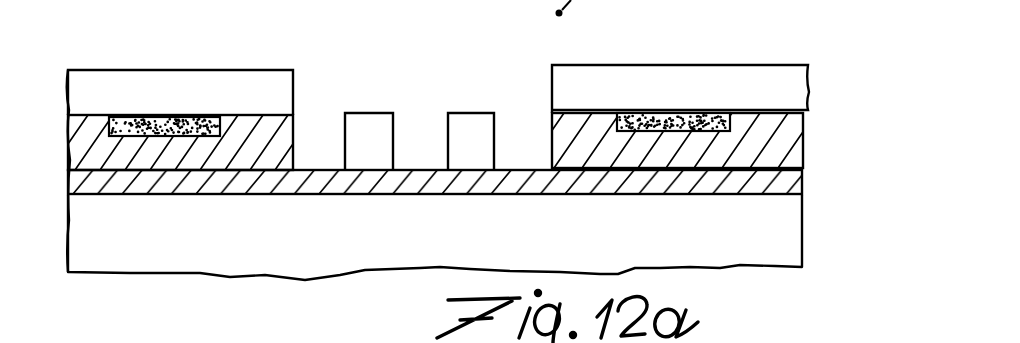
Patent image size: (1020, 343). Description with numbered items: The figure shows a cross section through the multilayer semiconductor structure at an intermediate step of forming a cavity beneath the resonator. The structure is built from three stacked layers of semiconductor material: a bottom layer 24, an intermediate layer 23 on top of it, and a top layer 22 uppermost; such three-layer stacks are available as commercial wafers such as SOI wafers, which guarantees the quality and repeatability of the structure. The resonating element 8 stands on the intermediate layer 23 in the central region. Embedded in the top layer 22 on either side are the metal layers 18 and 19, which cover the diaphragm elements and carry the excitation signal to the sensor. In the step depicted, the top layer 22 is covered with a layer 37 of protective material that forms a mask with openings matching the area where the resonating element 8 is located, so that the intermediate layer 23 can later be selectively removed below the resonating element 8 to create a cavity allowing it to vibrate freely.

The resonating element 8 is at (362, 122).
The metal layer 18 is at (138, 117).
The metal layer 19 is at (693, 118).
The top layer 22 is at (783, 145).
The intermediate layer 23 is at (800, 181).
The bottom layer 24 is at (787, 240).
The layer of protective material 37 is at (200, 80).